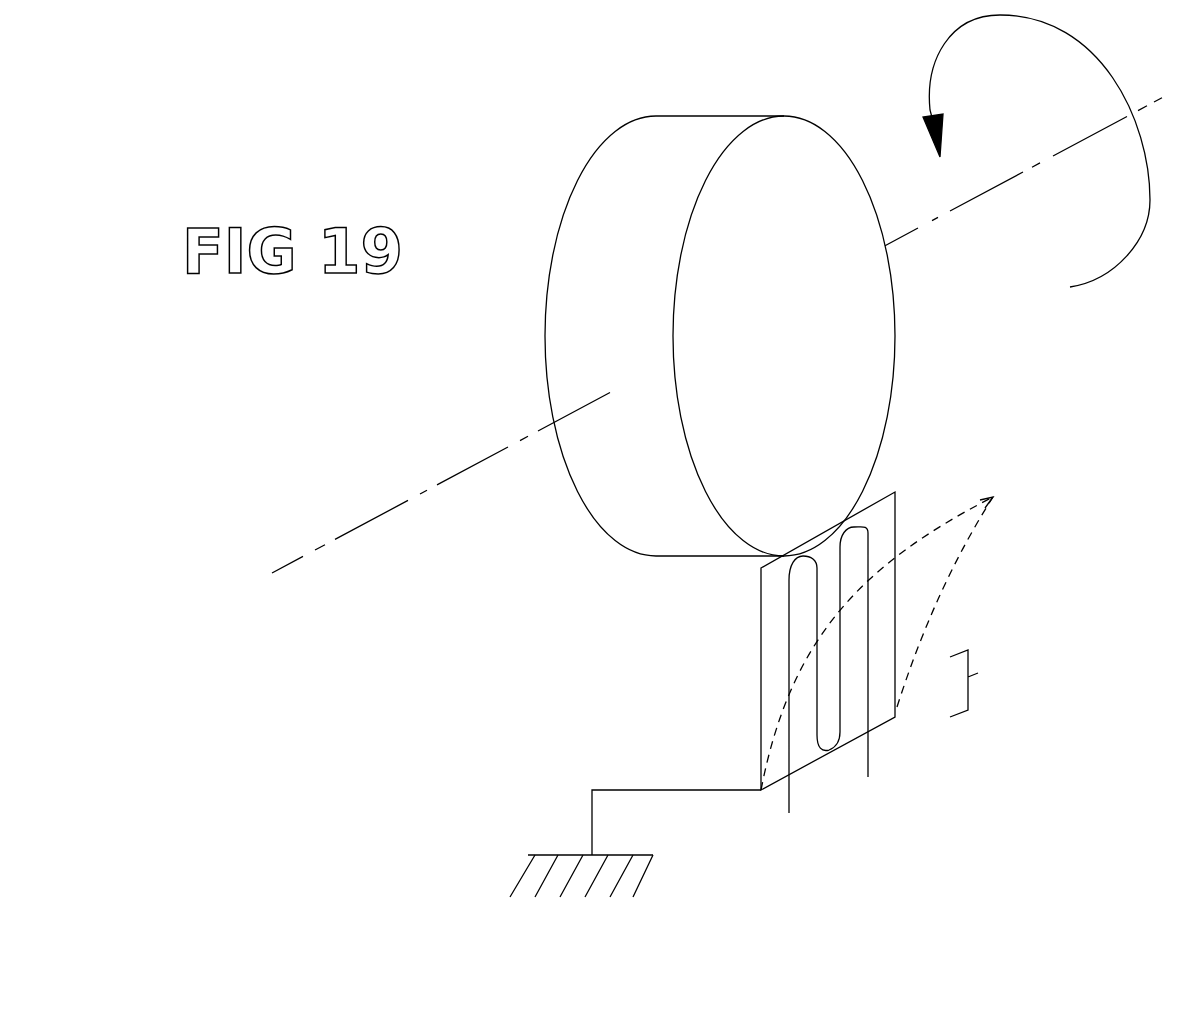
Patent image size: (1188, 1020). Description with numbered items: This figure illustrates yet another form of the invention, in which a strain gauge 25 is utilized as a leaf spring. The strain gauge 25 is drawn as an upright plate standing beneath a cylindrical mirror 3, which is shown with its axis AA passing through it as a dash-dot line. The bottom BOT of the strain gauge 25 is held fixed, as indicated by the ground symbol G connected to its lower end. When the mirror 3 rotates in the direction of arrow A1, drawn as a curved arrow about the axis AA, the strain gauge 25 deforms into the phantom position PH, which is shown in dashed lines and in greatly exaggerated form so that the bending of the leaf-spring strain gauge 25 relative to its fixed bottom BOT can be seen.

The mirror 3 is at (793, 369).
The strain gauge 25 is at (940, 471).
The arrow A1 is at (1135, 257).
The roller axis AA is at (425, 495).
The phantom position PH is at (950, 566).
The bottom BOT is at (996, 683).
The ground symbol G is at (700, 860).